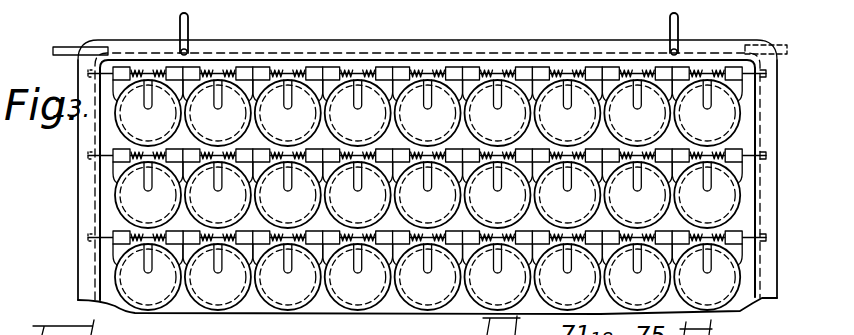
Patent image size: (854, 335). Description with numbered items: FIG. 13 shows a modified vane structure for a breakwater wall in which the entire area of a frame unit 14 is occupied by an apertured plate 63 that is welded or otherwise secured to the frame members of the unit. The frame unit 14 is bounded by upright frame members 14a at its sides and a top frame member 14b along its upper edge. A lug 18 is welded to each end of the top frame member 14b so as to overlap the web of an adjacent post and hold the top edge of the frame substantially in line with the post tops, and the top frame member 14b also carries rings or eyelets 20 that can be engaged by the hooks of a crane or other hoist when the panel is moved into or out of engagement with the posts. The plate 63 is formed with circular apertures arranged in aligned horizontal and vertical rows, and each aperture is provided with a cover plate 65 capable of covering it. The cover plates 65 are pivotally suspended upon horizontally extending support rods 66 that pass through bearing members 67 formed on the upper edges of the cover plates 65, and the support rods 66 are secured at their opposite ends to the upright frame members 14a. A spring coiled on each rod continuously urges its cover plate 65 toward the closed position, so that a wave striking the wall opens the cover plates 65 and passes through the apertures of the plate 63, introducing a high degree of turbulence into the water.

The frame unit 14 is at (263, 40).
The upright frame member 14a is at (88, 262).
The top frame member 14b is at (358, 42).
The lug 18 is at (69, 46).
The ring or eyelet 20 is at (180, 23).
The apertured plate 63 is at (108, 137).
The cover plate 65 is at (125, 192).
The support rod 66 is at (100, 172).
The bearing member 67 is at (118, 240).